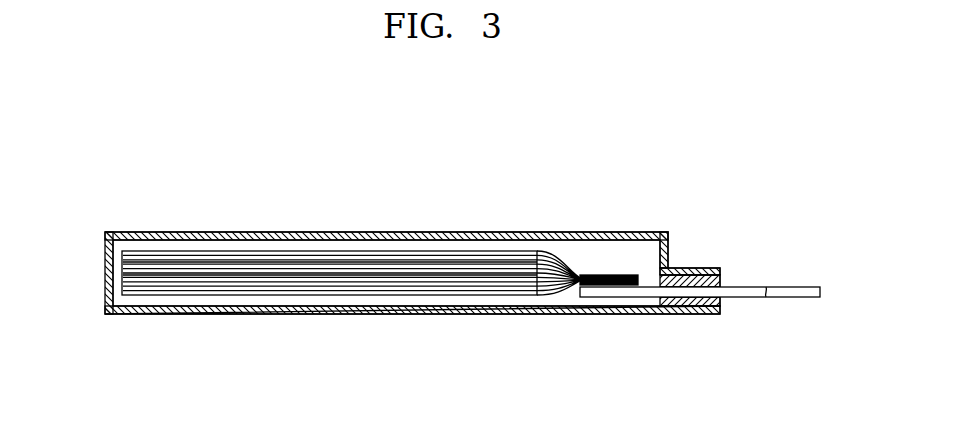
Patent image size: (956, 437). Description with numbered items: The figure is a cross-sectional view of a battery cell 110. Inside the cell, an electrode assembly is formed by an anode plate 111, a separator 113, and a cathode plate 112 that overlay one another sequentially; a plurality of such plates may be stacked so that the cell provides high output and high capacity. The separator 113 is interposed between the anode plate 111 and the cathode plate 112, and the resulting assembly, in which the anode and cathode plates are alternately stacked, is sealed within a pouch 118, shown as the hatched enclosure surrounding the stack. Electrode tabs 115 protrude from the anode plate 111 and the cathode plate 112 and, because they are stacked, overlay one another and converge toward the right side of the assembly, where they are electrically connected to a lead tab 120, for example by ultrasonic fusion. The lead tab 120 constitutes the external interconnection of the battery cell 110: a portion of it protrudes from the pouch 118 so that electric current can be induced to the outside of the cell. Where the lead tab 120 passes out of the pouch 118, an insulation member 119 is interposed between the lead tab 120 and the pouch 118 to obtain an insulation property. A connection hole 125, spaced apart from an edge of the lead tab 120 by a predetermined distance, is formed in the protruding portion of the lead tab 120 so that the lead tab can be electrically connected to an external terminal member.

The battery cell 110 is at (267, 218).
The anode plate 111 is at (123, 255).
The cathode plate 112 is at (123, 267).
The separator 113 is at (123, 260).
The electrode tabs 115 is at (558, 262).
The pouch 118 is at (169, 233).
The insulation member 119 is at (708, 309).
The lead tab 120 is at (803, 298).
The connection hole 125 is at (774, 287).